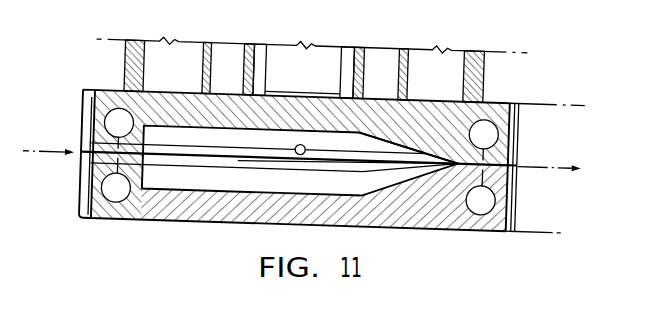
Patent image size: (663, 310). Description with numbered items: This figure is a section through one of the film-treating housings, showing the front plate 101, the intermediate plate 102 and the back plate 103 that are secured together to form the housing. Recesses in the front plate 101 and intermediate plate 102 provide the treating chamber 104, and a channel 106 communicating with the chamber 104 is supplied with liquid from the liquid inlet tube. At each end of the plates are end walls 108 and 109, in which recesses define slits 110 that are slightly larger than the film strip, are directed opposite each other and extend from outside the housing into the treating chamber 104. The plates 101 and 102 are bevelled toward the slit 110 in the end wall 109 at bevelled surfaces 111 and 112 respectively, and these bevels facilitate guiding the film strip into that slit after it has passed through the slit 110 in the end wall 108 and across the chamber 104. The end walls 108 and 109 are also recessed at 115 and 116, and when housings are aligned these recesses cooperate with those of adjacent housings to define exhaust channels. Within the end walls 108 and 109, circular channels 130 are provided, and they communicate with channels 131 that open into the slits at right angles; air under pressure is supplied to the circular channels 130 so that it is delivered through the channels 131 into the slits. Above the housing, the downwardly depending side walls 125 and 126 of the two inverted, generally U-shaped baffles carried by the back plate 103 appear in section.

The front plate 101 is at (148, 212).
The intermediate plate 102 is at (95, 100).
The back plate 103 is at (125, 62).
The treating chamber 104 is at (210, 177).
The channel 106 is at (299, 154).
The end wall 108 is at (95, 125).
The end wall 109 is at (513, 198).
The slit 110 is at (95, 141).
The bevelled surface 111 is at (367, 192).
The bevelled surface 112 is at (401, 140).
The recess 115 is at (88, 97).
The recess 116 is at (516, 126).
The side wall 125 is at (243, 54).
The side wall 126 is at (200, 52).
The circular channel 130 is at (128, 123).
The channel 131 is at (93, 163).